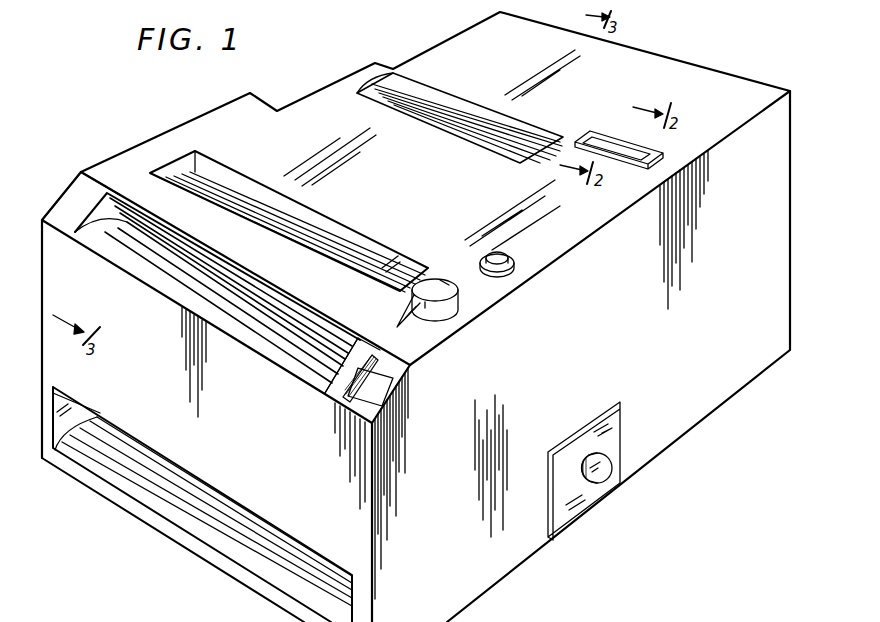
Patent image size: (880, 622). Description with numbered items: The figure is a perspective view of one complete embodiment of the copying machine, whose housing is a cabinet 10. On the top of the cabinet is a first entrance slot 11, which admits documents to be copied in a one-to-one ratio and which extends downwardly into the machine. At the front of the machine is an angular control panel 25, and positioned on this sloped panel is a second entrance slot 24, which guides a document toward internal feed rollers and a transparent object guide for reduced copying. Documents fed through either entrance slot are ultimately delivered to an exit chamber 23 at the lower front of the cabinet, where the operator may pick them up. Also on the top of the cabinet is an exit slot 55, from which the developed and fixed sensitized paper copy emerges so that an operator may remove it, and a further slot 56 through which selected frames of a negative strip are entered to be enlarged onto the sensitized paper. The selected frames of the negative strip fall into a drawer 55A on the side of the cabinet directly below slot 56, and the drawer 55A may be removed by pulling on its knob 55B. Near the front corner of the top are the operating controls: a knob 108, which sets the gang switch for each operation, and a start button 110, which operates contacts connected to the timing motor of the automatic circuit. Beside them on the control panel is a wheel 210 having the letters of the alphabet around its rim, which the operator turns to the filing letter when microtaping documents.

The cabinet 10 is at (723, 84).
The first entrance slot 11 is at (228, 172).
The exit chamber 23 is at (173, 518).
The second entrance slot 24 is at (145, 269).
The angular control panel 25 is at (66, 192).
The exit slot 55 is at (484, 106).
The drawer 55A is at (621, 410).
The knob 55B is at (598, 484).
The slot 56 is at (607, 132).
The knob 108 is at (446, 284).
The start button 110 is at (511, 257).
The wheel 210 is at (385, 368).